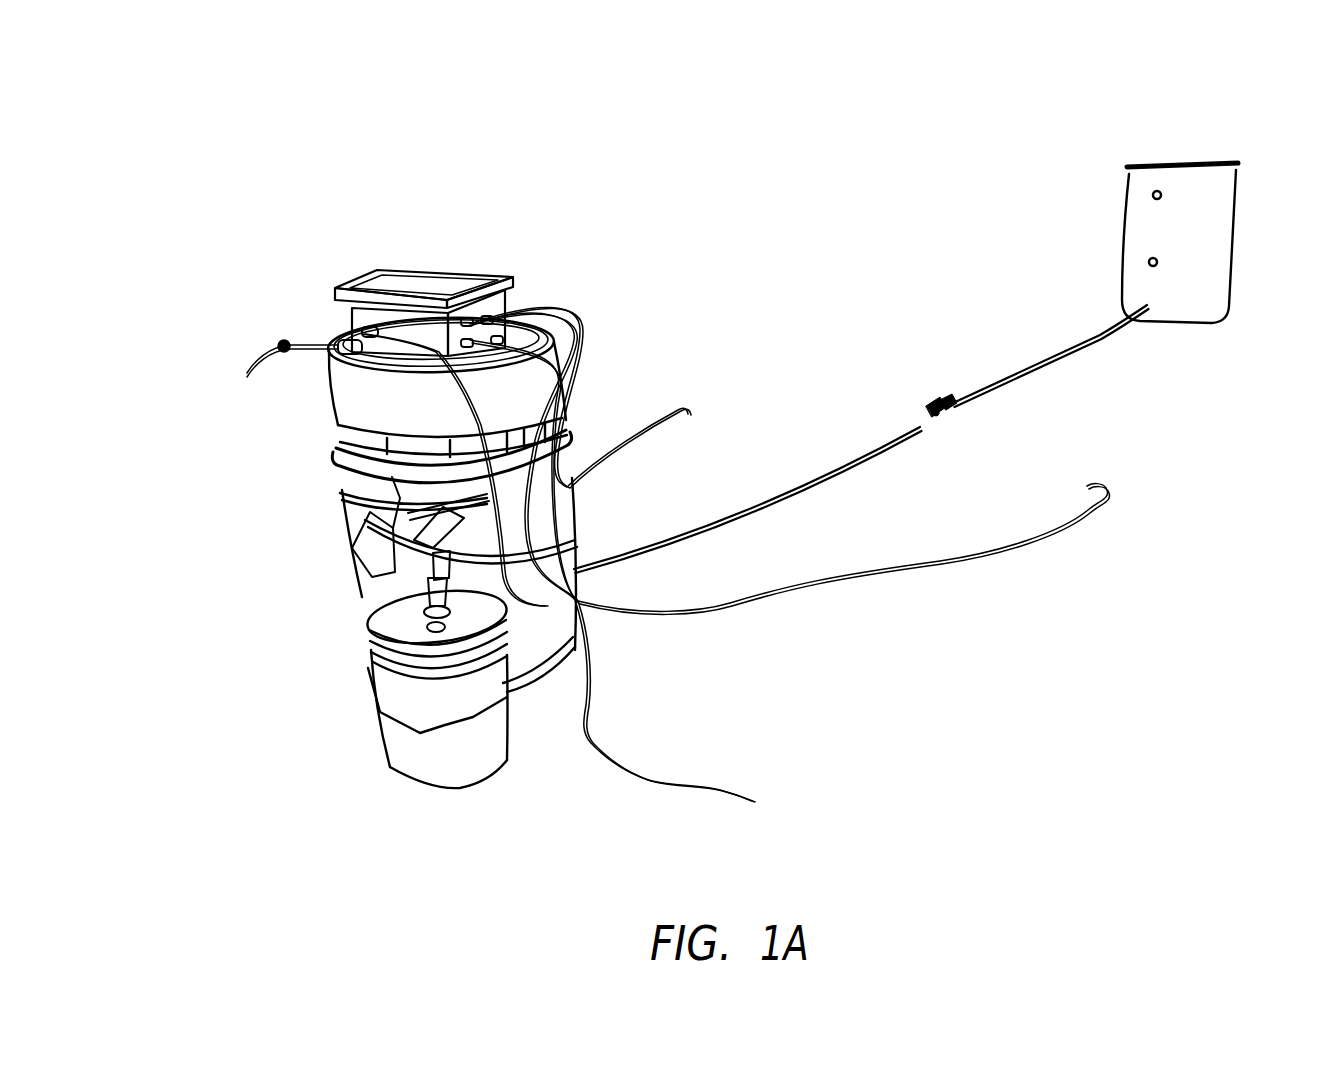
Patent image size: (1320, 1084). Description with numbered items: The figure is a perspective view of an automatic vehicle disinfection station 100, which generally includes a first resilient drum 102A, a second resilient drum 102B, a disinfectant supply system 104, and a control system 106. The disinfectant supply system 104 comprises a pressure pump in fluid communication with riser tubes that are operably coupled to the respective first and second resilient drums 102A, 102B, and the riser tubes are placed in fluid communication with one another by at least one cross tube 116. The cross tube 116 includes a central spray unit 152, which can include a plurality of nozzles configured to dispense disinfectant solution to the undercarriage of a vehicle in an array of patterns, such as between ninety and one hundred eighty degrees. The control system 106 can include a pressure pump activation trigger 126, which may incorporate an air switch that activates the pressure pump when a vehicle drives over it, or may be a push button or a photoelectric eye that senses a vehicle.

The automatic vehicle disinfection station 100 is at (1062, 106).
The first resilient drum 102A is at (500, 408).
The second resilient drum 102B is at (1140, 237).
The disinfectant supply system 104 is at (1043, 372).
The control system 106 is at (343, 283).
The cross tube 116 is at (797, 489).
The pressure pump activation trigger 126 is at (860, 575).
The central spray unit 152 is at (932, 400).